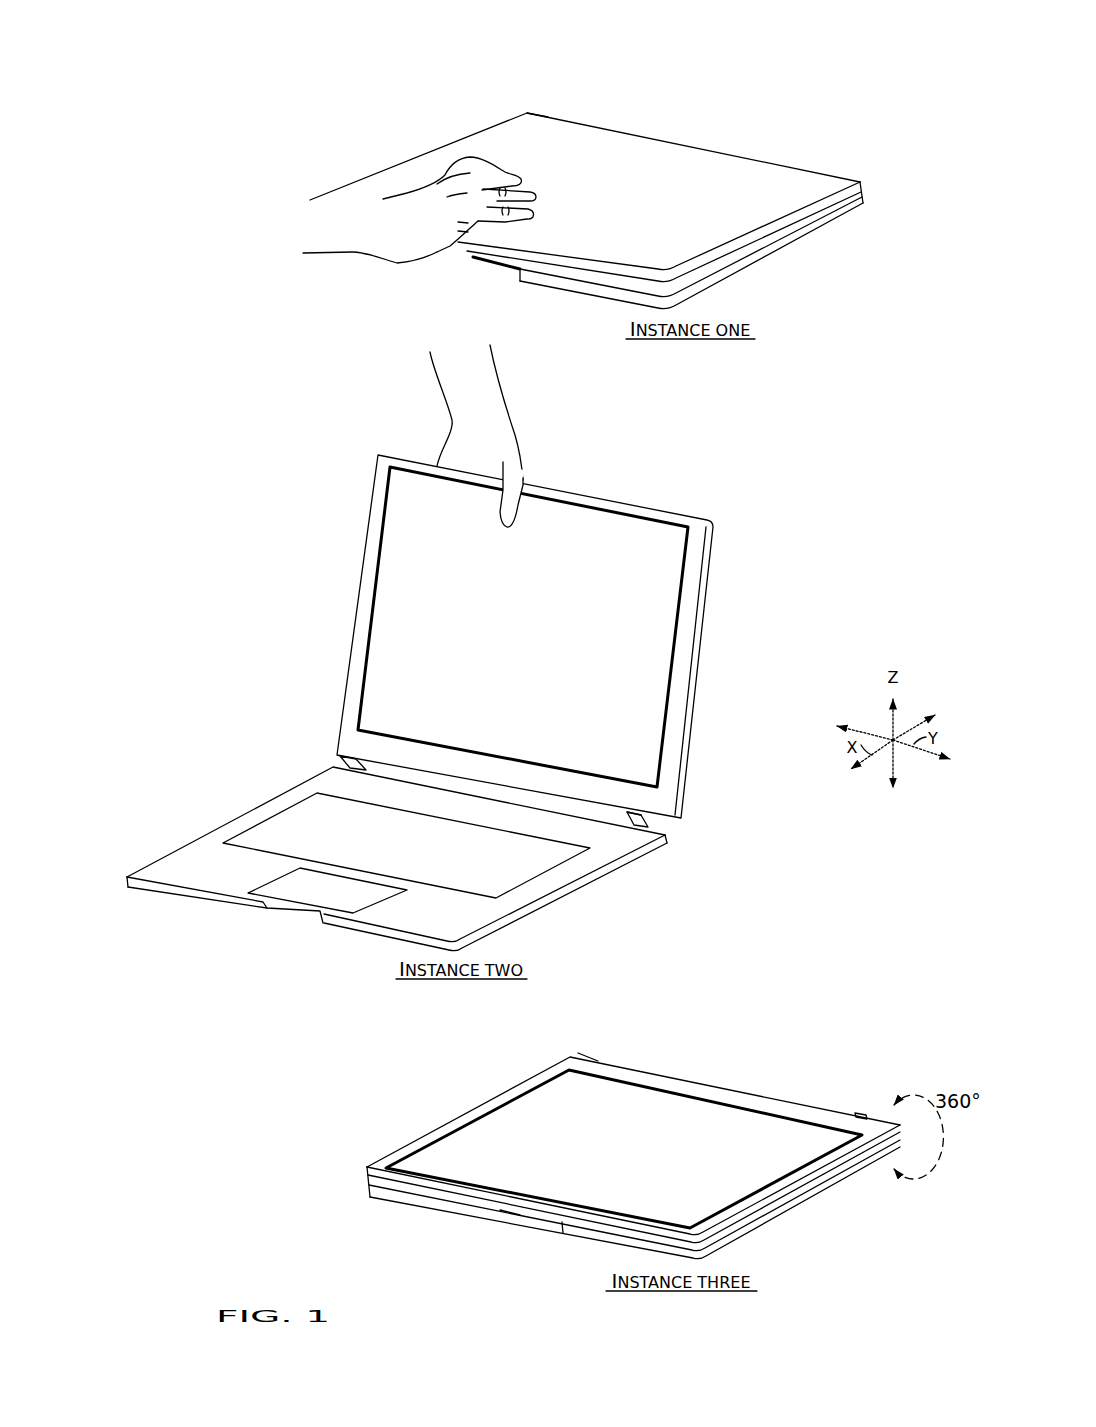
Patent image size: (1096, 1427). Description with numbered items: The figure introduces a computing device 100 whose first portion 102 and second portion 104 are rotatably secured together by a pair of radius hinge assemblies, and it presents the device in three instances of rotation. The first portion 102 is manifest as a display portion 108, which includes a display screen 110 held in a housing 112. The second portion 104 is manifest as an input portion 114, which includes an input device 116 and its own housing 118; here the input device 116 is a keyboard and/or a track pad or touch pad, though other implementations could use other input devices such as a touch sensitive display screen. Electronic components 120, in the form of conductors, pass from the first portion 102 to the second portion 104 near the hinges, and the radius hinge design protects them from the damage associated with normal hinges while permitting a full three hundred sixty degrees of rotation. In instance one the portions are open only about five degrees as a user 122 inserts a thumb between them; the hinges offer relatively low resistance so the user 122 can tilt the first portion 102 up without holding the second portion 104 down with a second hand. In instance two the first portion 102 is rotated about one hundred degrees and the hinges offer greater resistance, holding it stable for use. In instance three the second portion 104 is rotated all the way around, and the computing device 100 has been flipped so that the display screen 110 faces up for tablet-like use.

The computing device 100 is at (777, 80).
The first portion 102 is at (373, 1158).
The second portion 104 is at (427, 1238).
The display portion 108 is at (369, 508).
The display screen 110 is at (683, 1176).
The housing 112 is at (349, 680).
The input portion 114 is at (746, 259).
The input device 116 is at (423, 862).
The housing 118 is at (559, 874).
The electronic components 120 is at (626, 815).
The user 122 is at (352, 254).